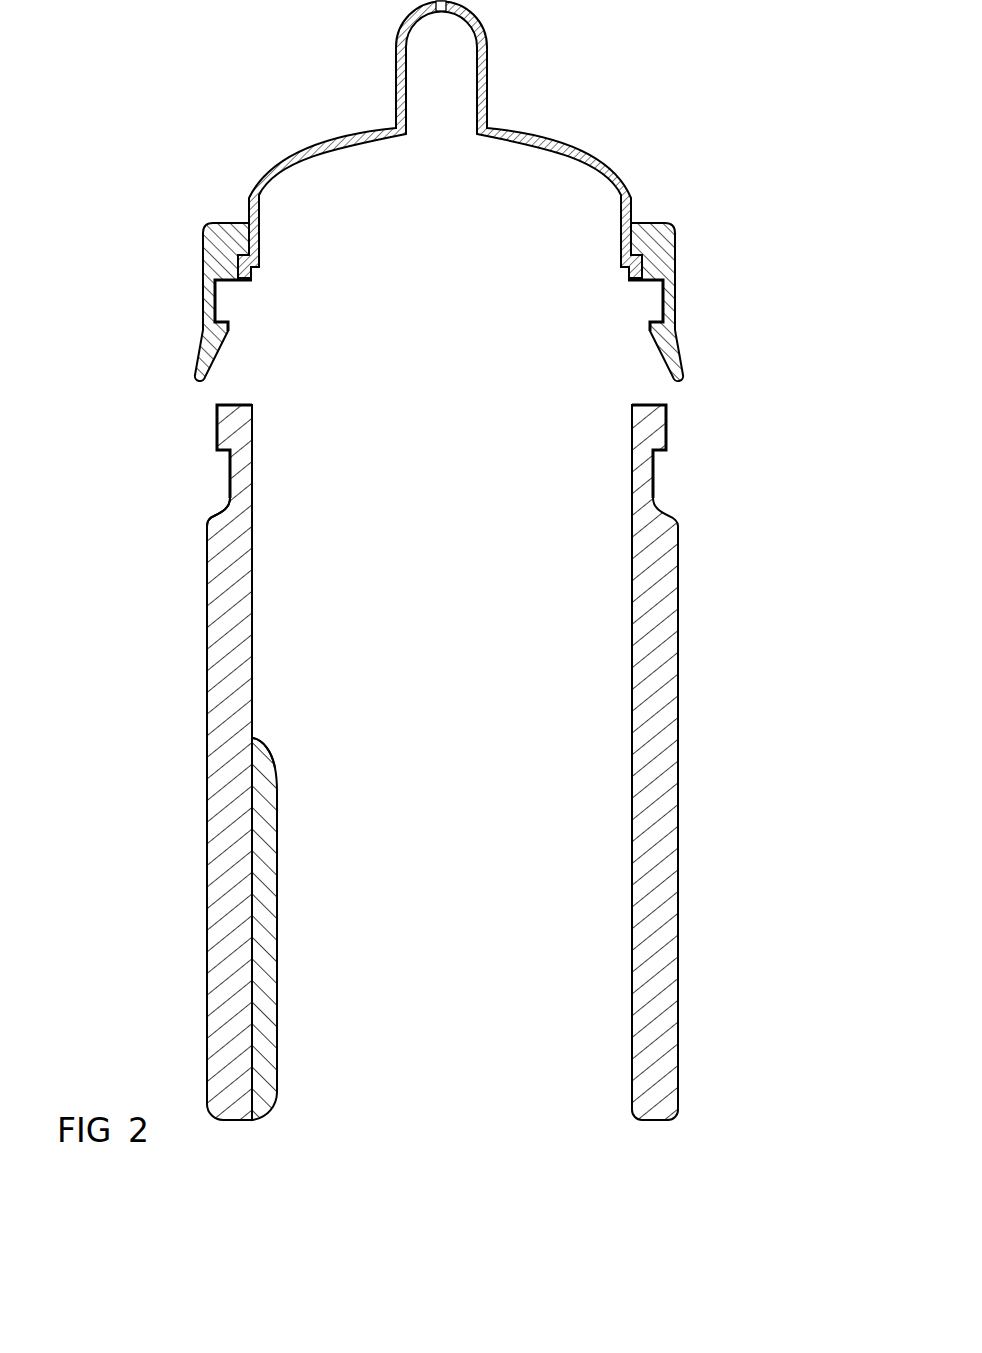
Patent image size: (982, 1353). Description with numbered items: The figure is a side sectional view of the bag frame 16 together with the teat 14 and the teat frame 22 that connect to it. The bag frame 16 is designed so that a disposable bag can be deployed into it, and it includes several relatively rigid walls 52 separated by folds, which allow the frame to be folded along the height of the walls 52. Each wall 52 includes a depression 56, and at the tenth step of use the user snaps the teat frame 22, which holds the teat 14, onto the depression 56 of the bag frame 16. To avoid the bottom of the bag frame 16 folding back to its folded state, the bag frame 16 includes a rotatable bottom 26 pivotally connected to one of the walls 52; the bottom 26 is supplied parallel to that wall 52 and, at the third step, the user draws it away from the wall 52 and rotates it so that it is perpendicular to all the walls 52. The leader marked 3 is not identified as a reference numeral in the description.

The teat 14 is at (488, 68).
The teat frame 22 is at (163, 280).
The bag frame 16 is at (716, 641).
The walls 52 is at (191, 762).
The depression 56 is at (228, 488).
The rotatable bottom 26 is at (270, 1035).
The interior of container 3 is at (527, 912).